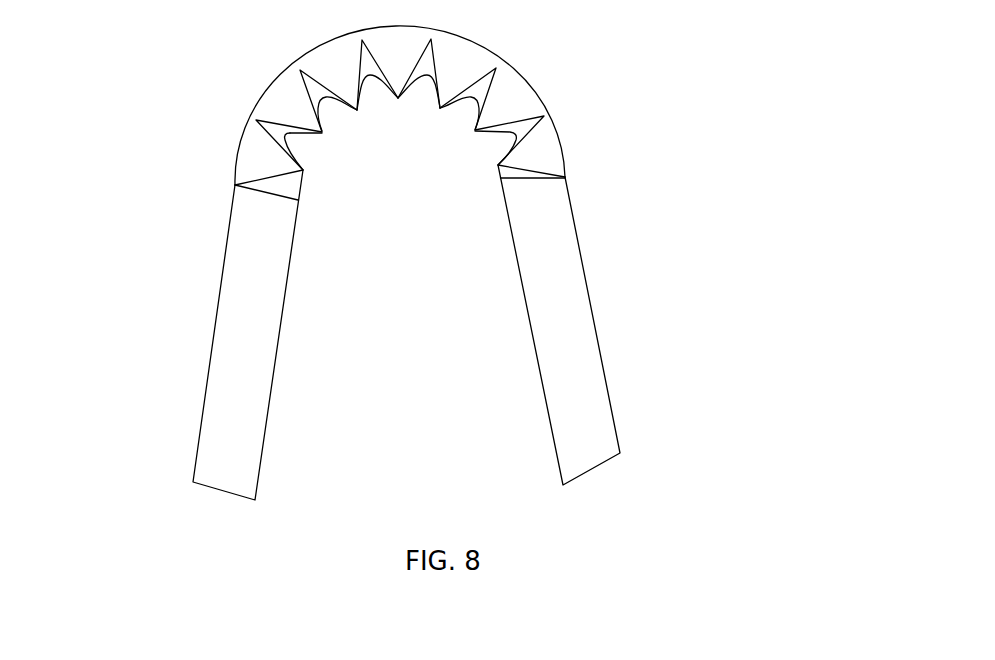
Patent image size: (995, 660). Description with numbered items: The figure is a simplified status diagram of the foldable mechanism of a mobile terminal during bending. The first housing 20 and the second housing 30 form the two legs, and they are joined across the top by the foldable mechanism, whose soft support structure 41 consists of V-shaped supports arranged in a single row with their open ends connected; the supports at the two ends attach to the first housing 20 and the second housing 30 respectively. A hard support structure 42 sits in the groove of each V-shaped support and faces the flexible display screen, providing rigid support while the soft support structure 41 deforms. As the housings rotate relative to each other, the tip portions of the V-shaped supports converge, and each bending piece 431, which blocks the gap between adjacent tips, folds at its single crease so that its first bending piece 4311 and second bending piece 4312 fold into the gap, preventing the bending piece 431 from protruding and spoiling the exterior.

The first housing 20 is at (587, 372).
The second housing 30 is at (230, 367).
The soft support structure 41 is at (540, 178).
The hard support structure 42 is at (512, 90).
The bending piece 431 is at (389, 174).
The first bending piece 4311 is at (284, 134).
The second bending piece 4312 is at (298, 158).